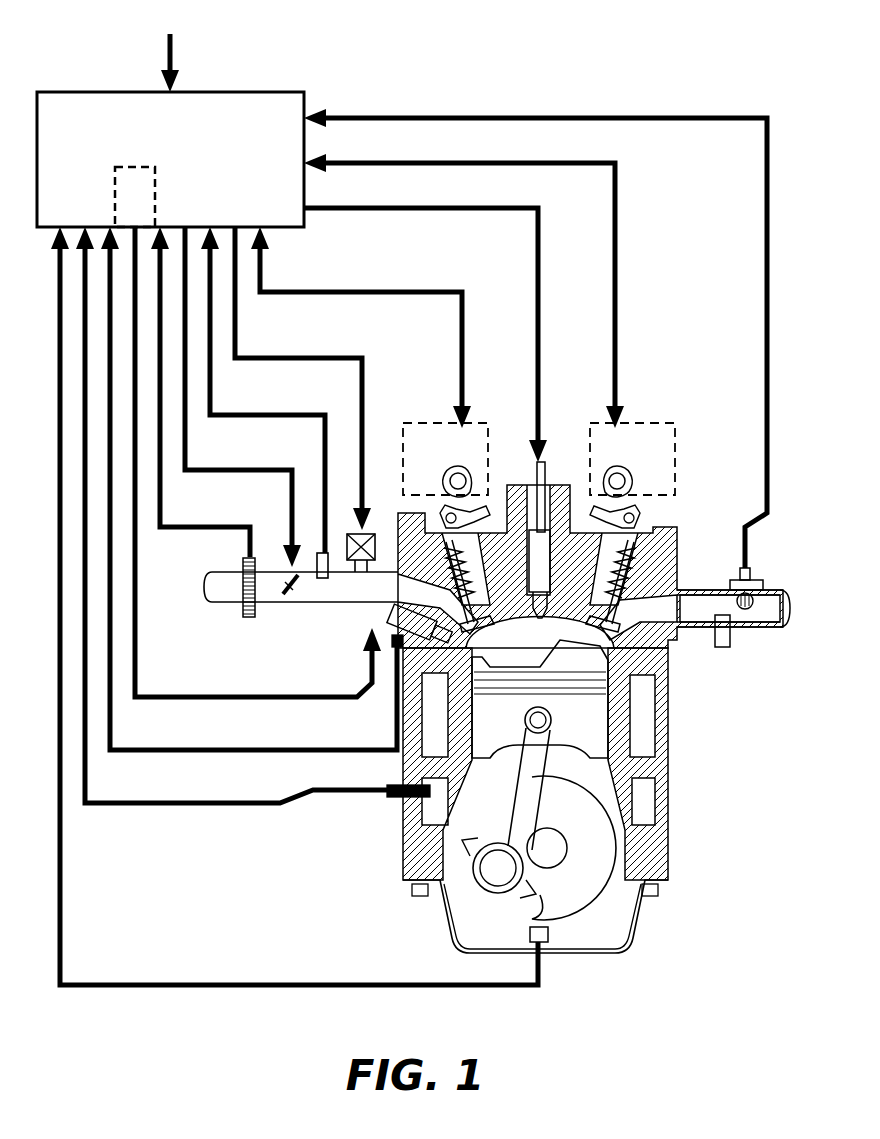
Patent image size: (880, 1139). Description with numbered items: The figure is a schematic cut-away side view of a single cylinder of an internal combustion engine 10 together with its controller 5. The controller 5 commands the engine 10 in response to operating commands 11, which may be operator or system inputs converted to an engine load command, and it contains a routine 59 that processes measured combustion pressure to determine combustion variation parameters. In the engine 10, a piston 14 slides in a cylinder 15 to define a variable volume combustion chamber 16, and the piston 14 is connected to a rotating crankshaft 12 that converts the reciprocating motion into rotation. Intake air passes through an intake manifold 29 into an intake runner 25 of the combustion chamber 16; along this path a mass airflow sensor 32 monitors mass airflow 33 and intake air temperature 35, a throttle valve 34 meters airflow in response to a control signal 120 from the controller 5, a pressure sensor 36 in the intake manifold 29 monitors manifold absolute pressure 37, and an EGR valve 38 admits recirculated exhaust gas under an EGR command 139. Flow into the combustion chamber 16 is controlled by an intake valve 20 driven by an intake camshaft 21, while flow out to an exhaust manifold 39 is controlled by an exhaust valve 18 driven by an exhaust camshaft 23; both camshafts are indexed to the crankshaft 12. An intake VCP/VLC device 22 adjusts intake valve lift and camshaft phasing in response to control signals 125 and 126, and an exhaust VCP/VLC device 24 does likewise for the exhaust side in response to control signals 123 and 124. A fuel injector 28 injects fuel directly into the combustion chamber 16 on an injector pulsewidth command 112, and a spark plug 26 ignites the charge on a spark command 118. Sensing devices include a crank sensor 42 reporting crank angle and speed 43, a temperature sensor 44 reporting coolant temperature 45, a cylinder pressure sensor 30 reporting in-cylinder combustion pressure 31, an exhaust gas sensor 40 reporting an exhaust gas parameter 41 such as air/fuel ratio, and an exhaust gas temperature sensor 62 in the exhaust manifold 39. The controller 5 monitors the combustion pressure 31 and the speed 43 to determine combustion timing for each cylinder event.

The controller 5 is at (163, 170).
The routine 59 is at (122, 208).
The operating commands 11 is at (157, 27).
The internal combustion engine 10 is at (555, 685).
The crankshaft 12 is at (585, 896).
The piston 14 is at (564, 733).
The cylinder 15 is at (614, 668).
The combustion chamber 16 is at (494, 655).
The exhaust valve 18 is at (610, 637).
The intake valve 20 is at (478, 622).
The intake camshaft 21 is at (462, 478).
The intake variable cam phasing/variable lift control device 22 is at (415, 456).
The exhaust camshaft 23 is at (622, 482).
The exhaust variable cam phasing/variable lift control device 24 is at (637, 456).
The intake runner 25 is at (457, 612).
The spark plug 26 is at (540, 470).
The fuel injector 28 is at (380, 628).
The intake manifold 29 is at (382, 570).
The cylinder pressure sensor 30 is at (365, 672).
The in-cylinder combustion pressure 31 is at (159, 746).
The mass airflow sensor 32 is at (243, 614).
The mass airflow 33 is at (201, 392).
The throttle valve 34 is at (285, 596).
The intake air temperature 35 is at (193, 525).
The pressure sensor 36 is at (322, 580).
The manifold absolute pressure 37 is at (295, 409).
The exhaust gas recirculation valve 38 is at (353, 574).
The exhaust manifold 39 is at (688, 590).
The exhaust gas sensor 40 is at (752, 576).
The exhaust gas parameter 41 is at (690, 112).
The crank sensor 42 is at (530, 934).
The crank angle and speed 43 is at (247, 979).
The temperature sensor 44 is at (392, 800).
The coolant temperature 45 is at (152, 799).
The exhaust gas temperature sensor 62 is at (723, 648).
The injector pulsewidth command 112 is at (158, 694).
The spark command 118 is at (503, 202).
The control signal (ETC) 120 is at (253, 467).
The control signal (eVLC) 123 is at (464, 279).
The control signal (eVCP) 124 is at (537, 157).
The control signal (iVLC) 125 is at (361, 327).
The control signal (iVCP) 126 is at (374, 284).
The EGR command 139 is at (331, 352).